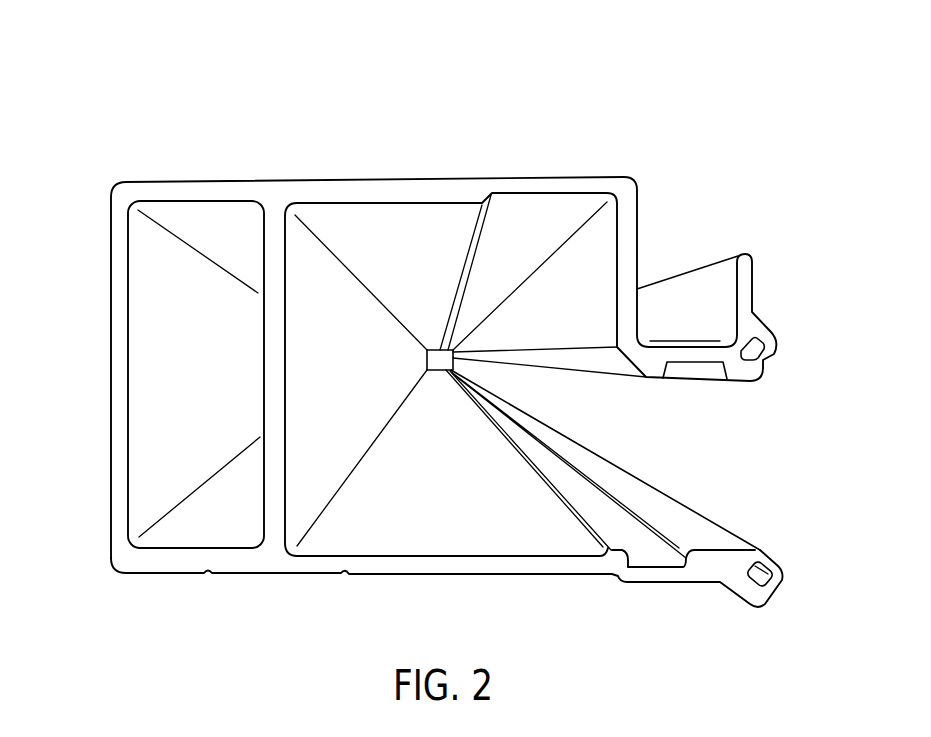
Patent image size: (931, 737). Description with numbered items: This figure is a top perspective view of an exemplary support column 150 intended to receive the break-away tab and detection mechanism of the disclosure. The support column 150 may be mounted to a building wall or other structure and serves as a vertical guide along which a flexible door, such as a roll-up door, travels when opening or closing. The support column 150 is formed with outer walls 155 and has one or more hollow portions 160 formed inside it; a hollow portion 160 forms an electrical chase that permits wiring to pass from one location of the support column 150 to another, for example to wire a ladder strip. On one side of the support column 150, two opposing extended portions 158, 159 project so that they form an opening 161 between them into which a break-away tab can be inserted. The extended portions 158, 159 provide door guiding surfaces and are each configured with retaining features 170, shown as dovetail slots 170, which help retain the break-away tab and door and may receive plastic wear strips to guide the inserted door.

The support column 150 is at (684, 83).
The outer walls 155 is at (348, 193).
The extended portion 158 is at (776, 291).
The extended portion 159 is at (776, 553).
The hollow portion 160 is at (143, 322).
The opening 161 is at (762, 444).
The retaining features 170 is at (693, 372).